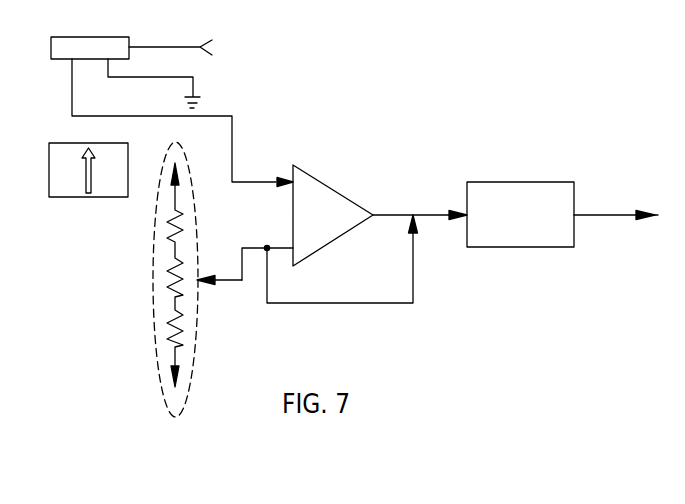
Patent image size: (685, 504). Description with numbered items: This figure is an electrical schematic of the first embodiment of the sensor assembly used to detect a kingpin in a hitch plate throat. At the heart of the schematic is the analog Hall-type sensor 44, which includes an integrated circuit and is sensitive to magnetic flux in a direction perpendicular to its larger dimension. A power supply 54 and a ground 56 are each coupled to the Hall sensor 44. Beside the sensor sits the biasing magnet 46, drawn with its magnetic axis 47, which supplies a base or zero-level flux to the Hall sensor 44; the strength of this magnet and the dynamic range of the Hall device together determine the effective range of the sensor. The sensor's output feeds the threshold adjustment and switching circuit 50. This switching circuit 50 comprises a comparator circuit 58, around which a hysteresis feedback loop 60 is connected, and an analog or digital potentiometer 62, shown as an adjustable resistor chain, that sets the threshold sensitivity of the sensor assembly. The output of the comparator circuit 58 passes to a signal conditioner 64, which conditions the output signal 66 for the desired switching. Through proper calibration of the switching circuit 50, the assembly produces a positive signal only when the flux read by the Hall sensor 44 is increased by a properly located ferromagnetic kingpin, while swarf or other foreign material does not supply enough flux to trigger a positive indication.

The analog Hall-type sensor 44 is at (102, 37).
The power supply 54 is at (174, 47).
The ground 56 is at (193, 78).
The biasing magnet 46 is at (66, 143).
The magnetic axis 47 is at (92, 182).
The threshold adjustment and switching circuit 50 is at (362, 124).
The comparator circuit 58 is at (322, 180).
The hysteresis feedback loop 60 is at (325, 303).
The analog or digital potentiometer 62 is at (195, 333).
The signal conditioner 64 is at (547, 182).
The output signal 66 is at (585, 213).